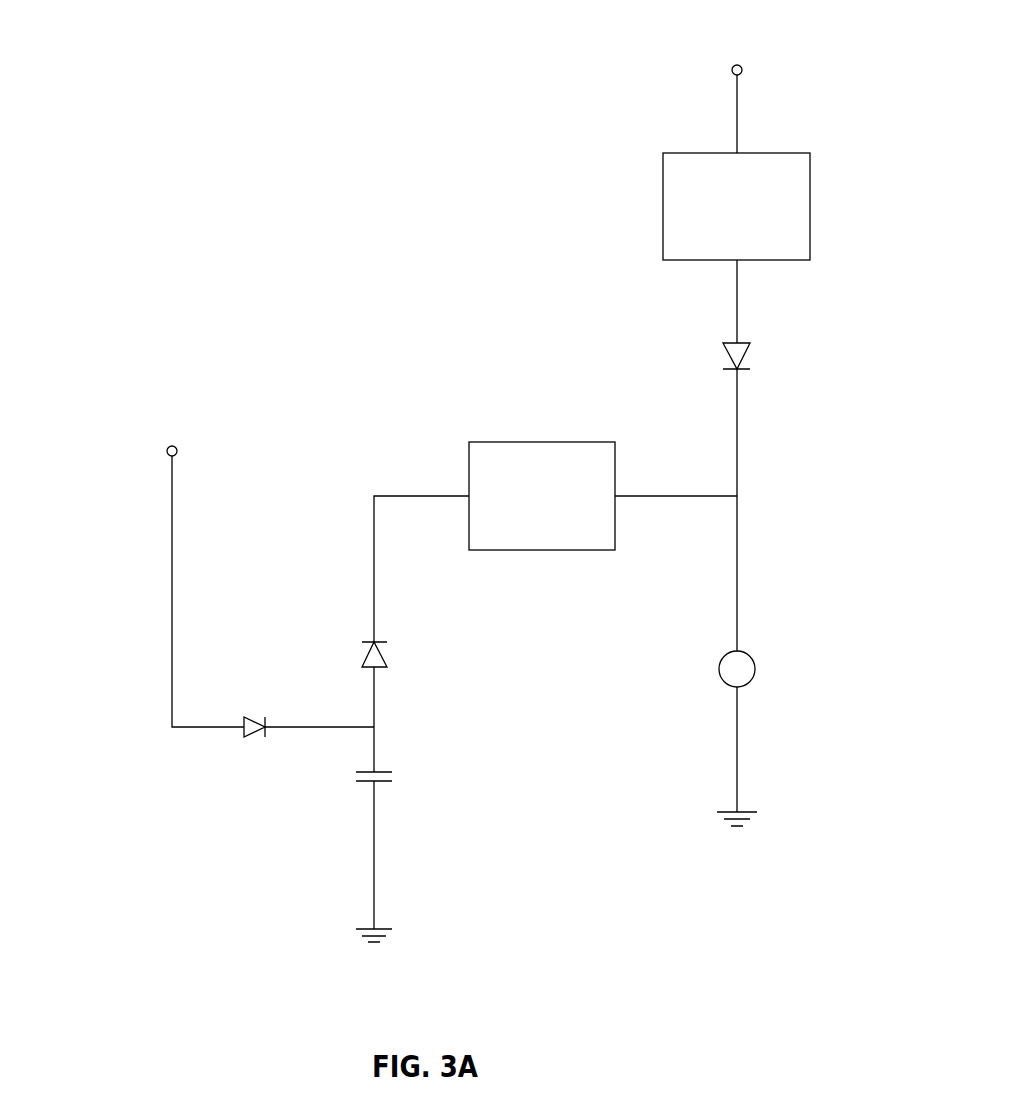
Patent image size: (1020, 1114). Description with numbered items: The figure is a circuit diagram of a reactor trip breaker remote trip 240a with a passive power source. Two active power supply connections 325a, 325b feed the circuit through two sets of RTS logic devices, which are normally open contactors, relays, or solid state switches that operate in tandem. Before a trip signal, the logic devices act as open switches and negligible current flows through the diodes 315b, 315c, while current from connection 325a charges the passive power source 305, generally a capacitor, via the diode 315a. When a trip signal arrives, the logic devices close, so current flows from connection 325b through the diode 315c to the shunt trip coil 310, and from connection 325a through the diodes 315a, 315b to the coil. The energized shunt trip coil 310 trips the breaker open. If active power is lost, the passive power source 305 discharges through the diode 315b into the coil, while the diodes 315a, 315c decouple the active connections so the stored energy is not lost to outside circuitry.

The reactor trip breaker remote trip 240a is at (228, 234).
The passive power source 305 is at (395, 775).
The shunt trip coil 310 is at (718, 669).
The diode 315a is at (257, 745).
The diode 315b is at (360, 654).
The diode 315c is at (719, 355).
The active power supply connection 325a is at (166, 448).
The active power supply connection 325b is at (731, 67).